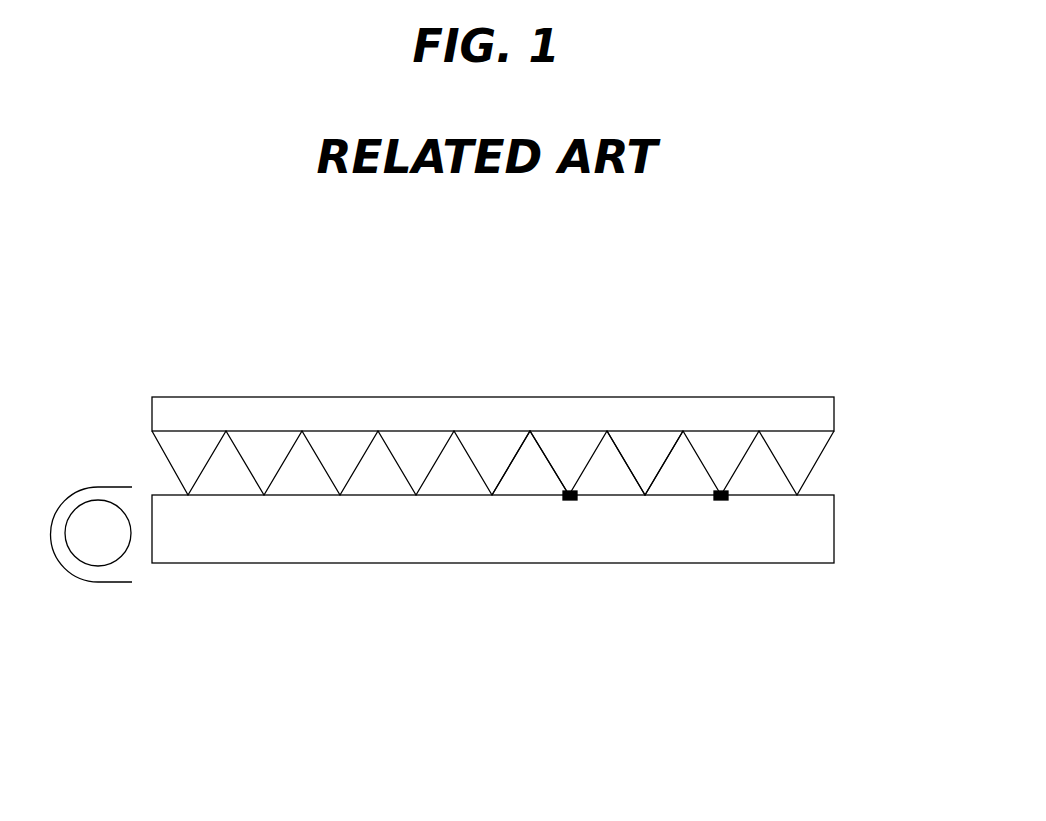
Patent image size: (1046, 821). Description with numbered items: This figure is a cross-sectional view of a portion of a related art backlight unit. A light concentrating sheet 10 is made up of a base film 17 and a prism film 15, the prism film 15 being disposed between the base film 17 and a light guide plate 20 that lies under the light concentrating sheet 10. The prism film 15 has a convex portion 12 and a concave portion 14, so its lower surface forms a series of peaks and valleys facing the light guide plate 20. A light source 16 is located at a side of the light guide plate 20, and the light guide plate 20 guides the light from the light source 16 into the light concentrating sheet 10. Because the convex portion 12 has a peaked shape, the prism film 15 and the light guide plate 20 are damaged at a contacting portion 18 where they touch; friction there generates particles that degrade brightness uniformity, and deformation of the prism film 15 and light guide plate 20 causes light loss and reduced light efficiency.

The light concentrating sheet 10 is at (832, 297).
The convex portion 12 is at (645, 478).
The concave portion 14 is at (531, 478).
The prism film 15 is at (815, 443).
The light source 16 is at (97, 535).
The base film 17 is at (750, 413).
The contacting portion 18 is at (570, 500).
The light guide plate 20 is at (737, 547).